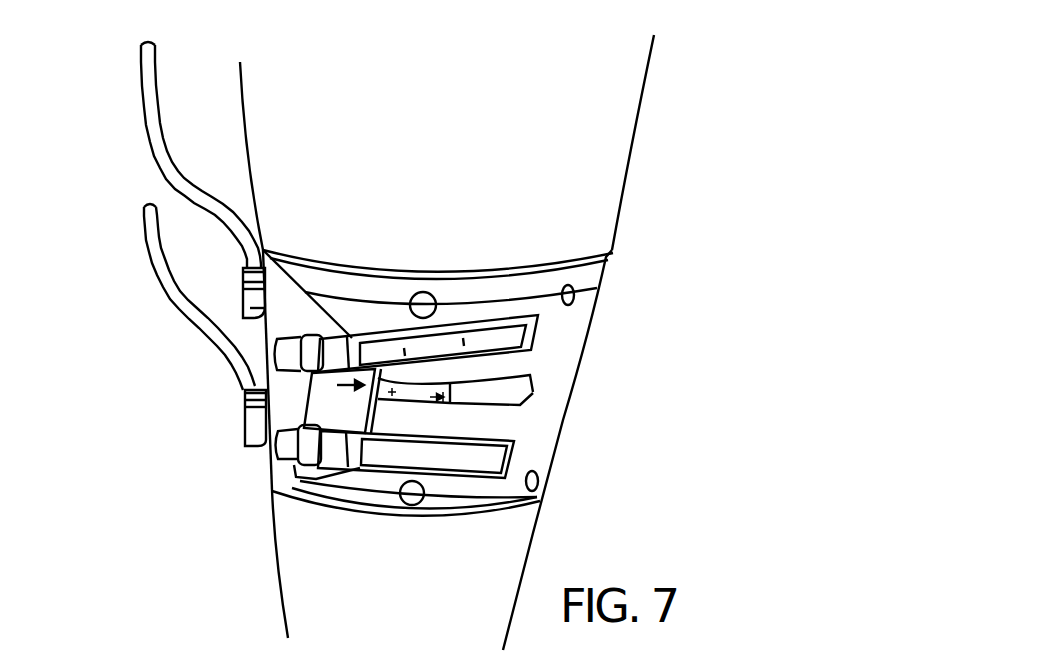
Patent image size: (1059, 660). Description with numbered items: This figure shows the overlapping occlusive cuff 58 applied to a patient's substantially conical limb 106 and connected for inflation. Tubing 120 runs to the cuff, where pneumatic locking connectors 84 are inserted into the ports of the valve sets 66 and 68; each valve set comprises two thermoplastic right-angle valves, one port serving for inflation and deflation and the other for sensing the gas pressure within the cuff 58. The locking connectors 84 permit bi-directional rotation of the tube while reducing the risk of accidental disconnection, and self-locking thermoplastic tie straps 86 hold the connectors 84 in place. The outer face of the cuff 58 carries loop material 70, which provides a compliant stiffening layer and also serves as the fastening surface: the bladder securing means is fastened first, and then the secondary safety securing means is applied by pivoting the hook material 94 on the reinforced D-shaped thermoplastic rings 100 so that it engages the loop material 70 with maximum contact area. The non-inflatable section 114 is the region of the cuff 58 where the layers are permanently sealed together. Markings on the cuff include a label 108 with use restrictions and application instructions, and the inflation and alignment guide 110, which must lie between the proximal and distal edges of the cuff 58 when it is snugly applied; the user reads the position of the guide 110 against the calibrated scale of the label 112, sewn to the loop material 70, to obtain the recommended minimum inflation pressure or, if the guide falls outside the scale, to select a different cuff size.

The cuff 58 is at (500, 517).
The valve set 66 is at (241, 320).
The valve set 68 is at (255, 446).
The loop material 70 is at (525, 422).
The pneumatic locking connector 84 is at (242, 277).
The tie strap 86 is at (244, 312).
The hook material 94 is at (507, 462).
The reinforced thermoplastic ring 100 is at (305, 367).
The limb 106 is at (580, 159).
The label 108 is at (548, 322).
The inflation and alignment guide 110 is at (337, 403).
The label 112 is at (378, 407).
The non-inflatable section 114 is at (283, 480).
The tubing 120 is at (142, 230).